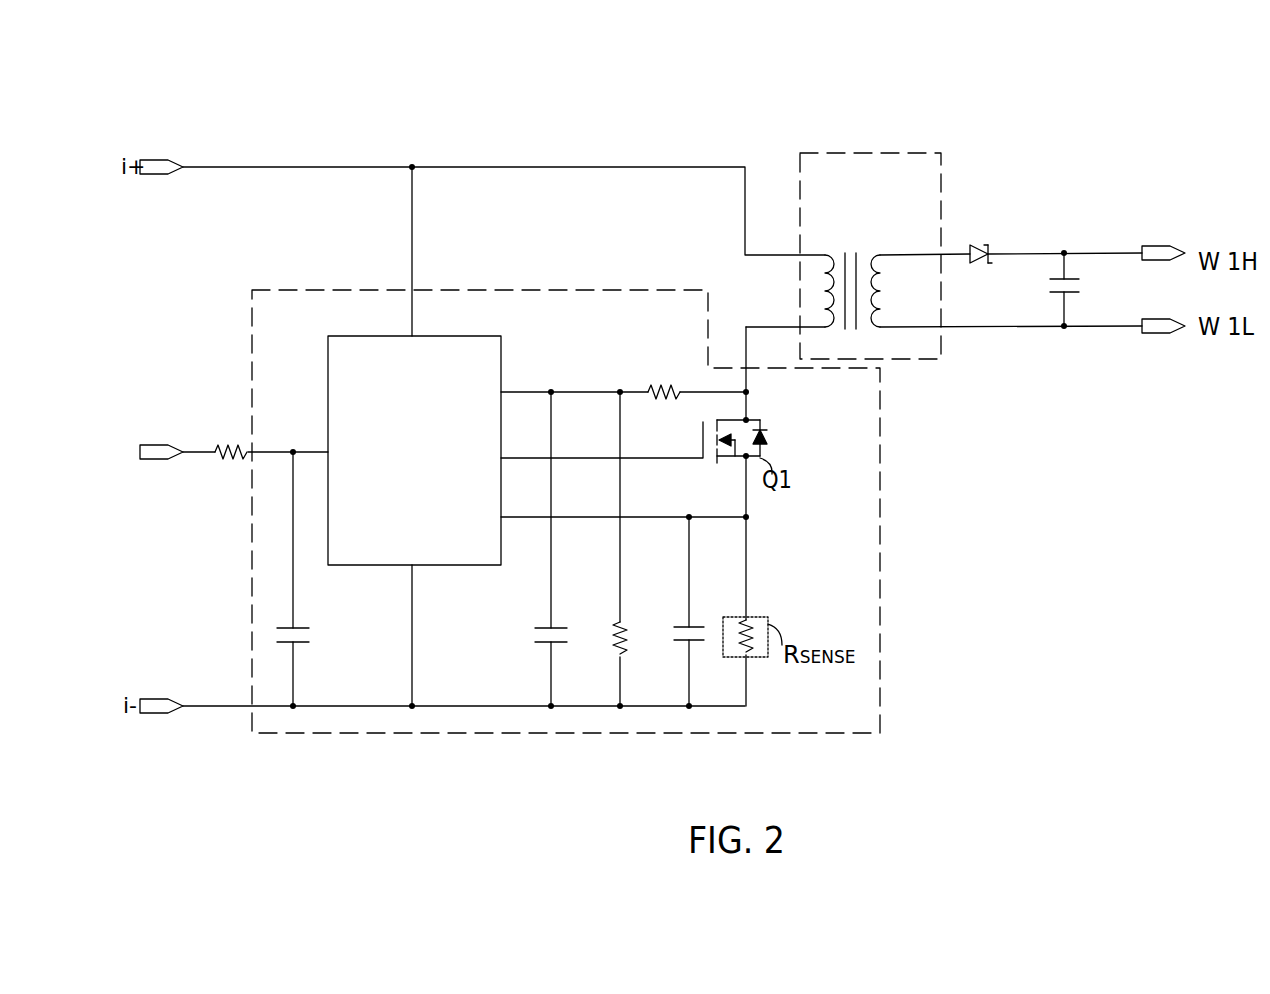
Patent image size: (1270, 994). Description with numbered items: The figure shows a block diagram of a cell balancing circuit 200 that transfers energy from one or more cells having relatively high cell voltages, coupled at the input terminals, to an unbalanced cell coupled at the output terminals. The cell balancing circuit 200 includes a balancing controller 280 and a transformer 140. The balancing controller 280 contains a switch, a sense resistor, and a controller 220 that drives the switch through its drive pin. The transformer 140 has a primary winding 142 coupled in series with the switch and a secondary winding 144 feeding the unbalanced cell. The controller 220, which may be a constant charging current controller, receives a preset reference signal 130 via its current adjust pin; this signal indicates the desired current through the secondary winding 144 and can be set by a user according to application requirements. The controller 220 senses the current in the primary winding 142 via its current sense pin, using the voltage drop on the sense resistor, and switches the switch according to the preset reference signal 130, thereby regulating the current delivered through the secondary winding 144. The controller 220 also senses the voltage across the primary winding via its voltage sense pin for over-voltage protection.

The cell balancing circuit 200 is at (204, 126).
The preset reference signal 130 is at (160, 444).
The controller 220 is at (440, 336).
The balancing controller 280 is at (880, 552).
The transformer 140 is at (892, 271).
The primary winding 142 is at (812, 256).
The secondary winding 144 is at (895, 256).